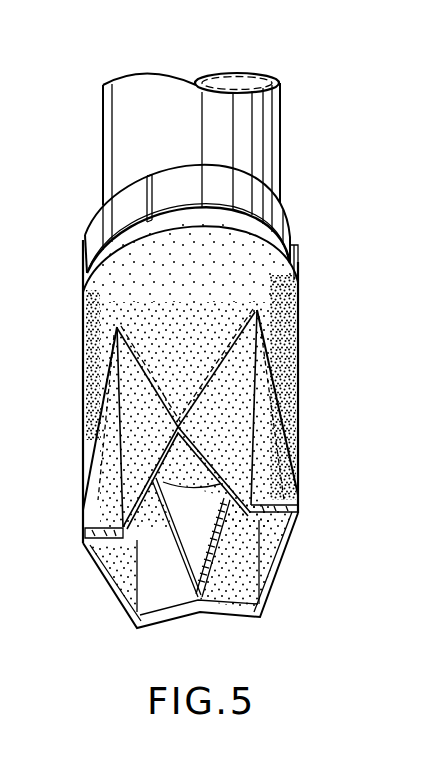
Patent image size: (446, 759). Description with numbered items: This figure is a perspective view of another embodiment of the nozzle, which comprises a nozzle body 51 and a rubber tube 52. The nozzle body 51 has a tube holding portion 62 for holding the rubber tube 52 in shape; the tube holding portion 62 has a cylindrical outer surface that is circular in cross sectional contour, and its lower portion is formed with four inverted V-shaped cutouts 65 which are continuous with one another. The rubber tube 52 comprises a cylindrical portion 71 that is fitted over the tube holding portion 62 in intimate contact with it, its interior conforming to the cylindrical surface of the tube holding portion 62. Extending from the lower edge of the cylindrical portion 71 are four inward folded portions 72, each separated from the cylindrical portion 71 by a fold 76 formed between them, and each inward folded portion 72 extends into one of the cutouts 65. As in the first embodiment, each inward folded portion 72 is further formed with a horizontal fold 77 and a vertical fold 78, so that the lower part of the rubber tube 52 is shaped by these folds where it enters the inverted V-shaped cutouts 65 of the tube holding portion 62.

The nozzle body 51 is at (290, 158).
The cylindrical portion 71 is at (290, 330).
The rubber tube 52 is at (312, 406).
The inward folded portion 72 is at (102, 407).
The fold 76 is at (138, 354).
The vertical fold 78 is at (117, 442).
The horizontal fold 77 is at (95, 565).
The tube holding portion 62 is at (180, 578).
The inverted V-shaped cutout 65 is at (222, 608).